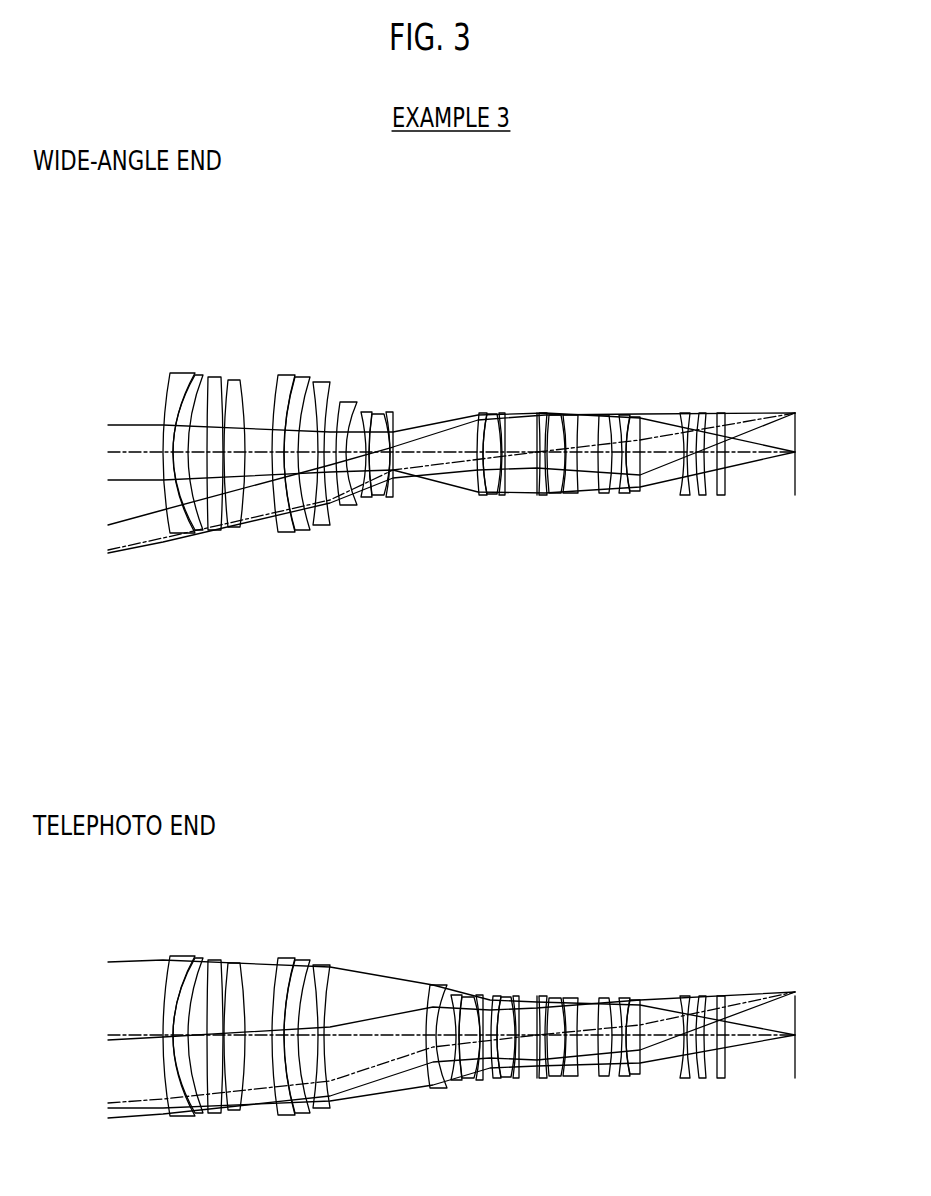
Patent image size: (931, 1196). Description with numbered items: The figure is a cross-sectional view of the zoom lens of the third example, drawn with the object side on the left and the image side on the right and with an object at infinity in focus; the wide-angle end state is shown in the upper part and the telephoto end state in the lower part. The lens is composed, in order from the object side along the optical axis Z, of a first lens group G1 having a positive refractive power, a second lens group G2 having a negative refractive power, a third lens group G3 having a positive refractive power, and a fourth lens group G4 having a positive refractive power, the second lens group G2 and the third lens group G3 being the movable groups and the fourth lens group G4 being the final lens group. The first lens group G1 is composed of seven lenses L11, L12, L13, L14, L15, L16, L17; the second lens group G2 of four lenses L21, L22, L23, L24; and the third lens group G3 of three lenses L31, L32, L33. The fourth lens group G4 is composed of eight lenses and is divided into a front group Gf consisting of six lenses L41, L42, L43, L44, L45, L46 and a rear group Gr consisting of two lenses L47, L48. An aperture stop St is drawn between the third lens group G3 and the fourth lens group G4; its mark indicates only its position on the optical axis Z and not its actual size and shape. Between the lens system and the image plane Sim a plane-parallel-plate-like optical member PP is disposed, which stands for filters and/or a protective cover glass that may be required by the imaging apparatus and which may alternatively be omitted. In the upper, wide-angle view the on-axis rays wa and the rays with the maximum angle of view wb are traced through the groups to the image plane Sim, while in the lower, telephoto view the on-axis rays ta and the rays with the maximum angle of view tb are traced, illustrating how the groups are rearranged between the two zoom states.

The first lens group G1 is at (330, 271).
The second lens group G2 is at (337, 271).
The third lens group G3 is at (572, 271).
The fourth lens group G4 is at (827, 229).
The front group Gf is at (747, 271).
The rear group Gr is at (753, 271).
The lens L11 is at (166, 374).
The lens L12 is at (199, 376).
The lens L13 is at (213, 377).
The lens L14 is at (230, 380).
The lens L15 is at (284, 376).
The lens L16 is at (303, 378).
The lens L17 is at (320, 382).
The lens L21 is at (348, 402).
The lens L22 is at (366, 412).
The lens L23 is at (379, 412).
The lens L24 is at (392, 412).
The lens L31 is at (481, 413).
The lens L32 is at (493, 413).
The lens L33 is at (504, 413).
The lens L41 is at (546, 413).
The lens L42 is at (558, 413).
The lens L43 is at (572, 413).
The lens L44 is at (604, 413).
The lens L45 is at (622, 413).
The lens L46 is at (636, 415).
The lens L47 is at (686, 413).
The lens L48 is at (702, 413).
The aperture stop St is at (537, 497).
The optical member PP is at (722, 497).
The image plane Sim is at (797, 489).
The optical axis Z is at (113, 442).
The on-axis rays wa is at (98, 418).
The rays with the maximum angle of view wb is at (98, 523).
The on-axis rays ta is at (62, 958).
The rays with the maximum angle of view tb is at (99, 1040).